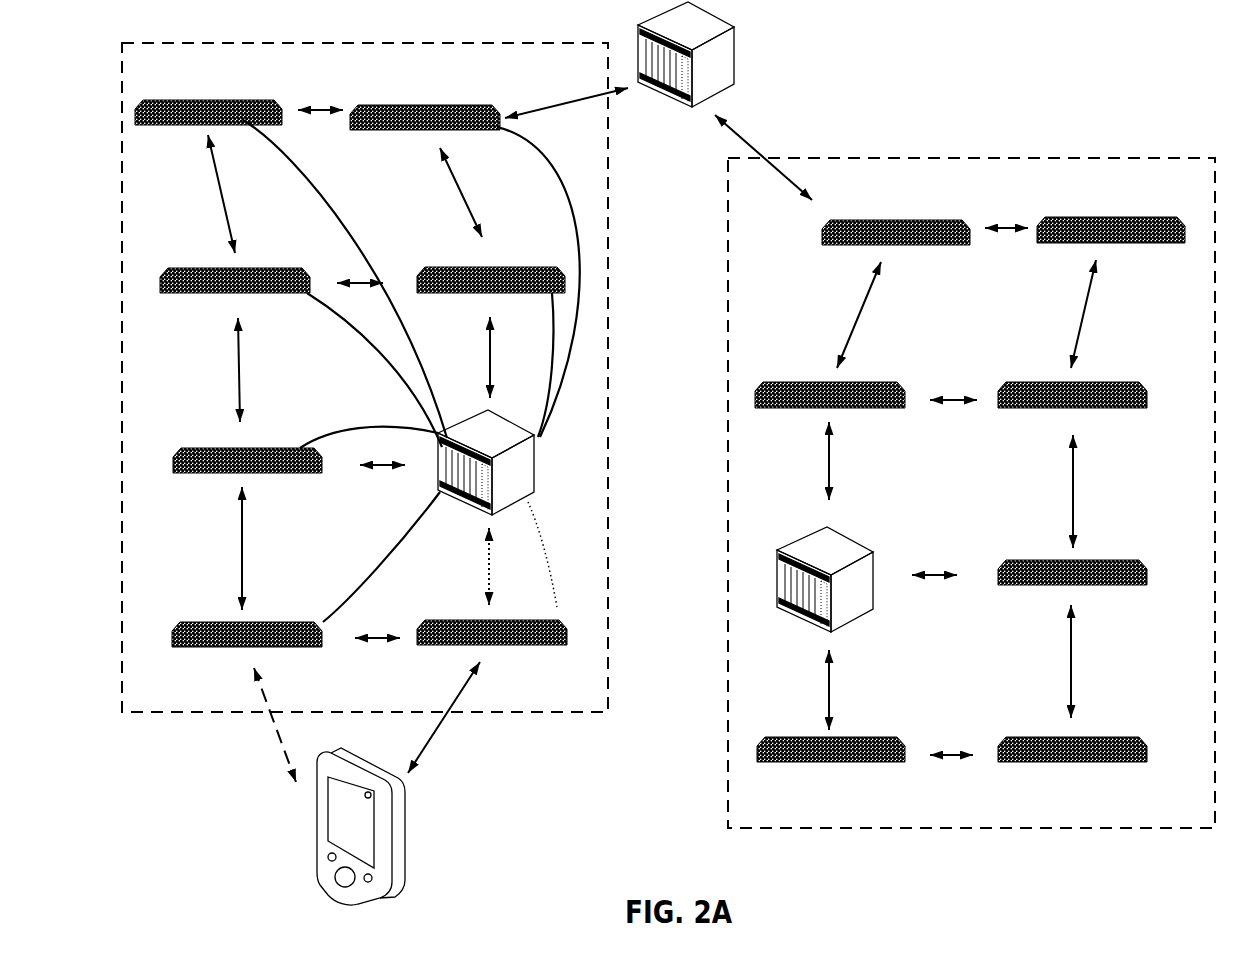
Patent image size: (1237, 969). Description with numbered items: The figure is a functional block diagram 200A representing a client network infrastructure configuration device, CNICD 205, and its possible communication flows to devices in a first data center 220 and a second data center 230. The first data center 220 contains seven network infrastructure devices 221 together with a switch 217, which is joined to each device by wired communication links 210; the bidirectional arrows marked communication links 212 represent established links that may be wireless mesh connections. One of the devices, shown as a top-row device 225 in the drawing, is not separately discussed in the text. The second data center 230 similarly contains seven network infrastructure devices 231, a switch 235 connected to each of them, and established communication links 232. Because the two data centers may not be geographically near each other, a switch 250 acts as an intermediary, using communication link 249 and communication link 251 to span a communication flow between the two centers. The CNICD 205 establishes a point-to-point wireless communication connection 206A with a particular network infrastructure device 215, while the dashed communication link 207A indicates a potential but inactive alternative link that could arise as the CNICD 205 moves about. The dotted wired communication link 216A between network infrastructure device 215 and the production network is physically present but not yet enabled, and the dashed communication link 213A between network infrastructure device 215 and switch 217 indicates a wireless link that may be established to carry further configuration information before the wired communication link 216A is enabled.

The functional block diagram 200A is at (945, 84).
The CNICD 205 is at (402, 843).
The wireless communication connection 206A is at (440, 735).
The communication link 207A is at (280, 732).
The wired communication links 210 is at (343, 205).
The communication links 212 is at (329, 106).
The communication link 213A is at (487, 565).
The network infrastructure device 215 is at (562, 646).
The wired communication link 216A is at (552, 557).
The switch 217 is at (542, 473).
The first data center 220 is at (195, 714).
The network infrastructure devices 221 is at (198, 118).
The network device 225 is at (433, 102).
The second data center 230 is at (937, 828).
The network infrastructure devices 231 is at (837, 248).
The communication links 232 is at (1007, 232).
The switch 235 is at (804, 540).
The communication link 249 is at (568, 103).
The switch 250 is at (738, 70).
The communication link 251 is at (757, 143).